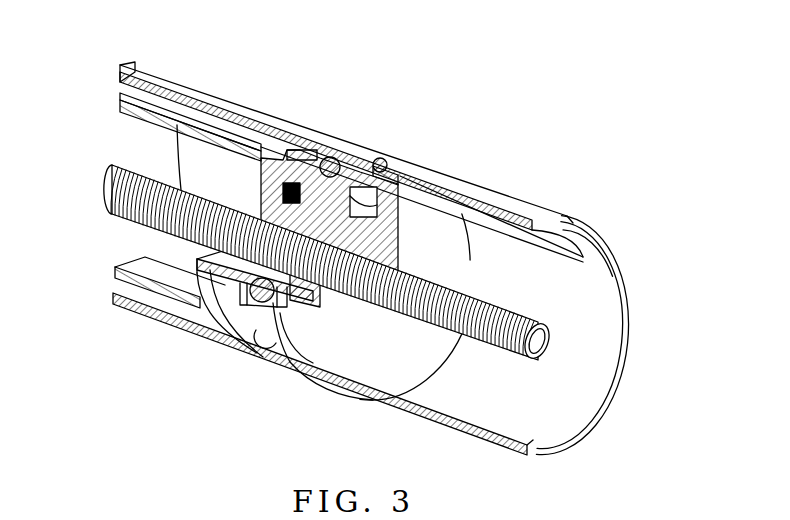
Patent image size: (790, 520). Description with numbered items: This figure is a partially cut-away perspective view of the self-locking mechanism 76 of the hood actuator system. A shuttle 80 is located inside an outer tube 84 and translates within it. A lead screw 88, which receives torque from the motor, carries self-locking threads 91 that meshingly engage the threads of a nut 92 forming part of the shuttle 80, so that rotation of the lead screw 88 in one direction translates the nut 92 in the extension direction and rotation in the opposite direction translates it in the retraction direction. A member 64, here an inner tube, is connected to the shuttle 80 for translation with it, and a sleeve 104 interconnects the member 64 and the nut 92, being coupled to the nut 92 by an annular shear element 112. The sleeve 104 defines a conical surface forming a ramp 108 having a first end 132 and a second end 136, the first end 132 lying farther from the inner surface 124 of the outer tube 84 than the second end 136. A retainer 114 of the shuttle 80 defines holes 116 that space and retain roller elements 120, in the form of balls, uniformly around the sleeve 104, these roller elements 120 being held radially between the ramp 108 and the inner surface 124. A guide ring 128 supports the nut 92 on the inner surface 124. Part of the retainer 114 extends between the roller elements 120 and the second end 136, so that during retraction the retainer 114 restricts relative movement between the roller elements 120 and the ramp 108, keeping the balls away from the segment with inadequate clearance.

The member 64 is at (118, 301).
The self-locking mechanism 76 is at (464, 103).
The shuttle 80 is at (473, 207).
The outer tube 84 is at (610, 257).
The lead screw 88 is at (540, 362).
The self-locking threads 91 is at (470, 345).
The nut 92 is at (363, 378).
The sleeve 104 is at (183, 327).
The ramp 108 is at (310, 157).
The shear element 112 is at (250, 186).
The retainer 114 is at (252, 305).
The holes 116 is at (350, 168).
The roller elements 120 is at (380, 158).
The inner surface 124 is at (500, 234).
The guide ring 128 is at (310, 377).
The first end 132 is at (440, 210).
The second end 136 is at (300, 158).